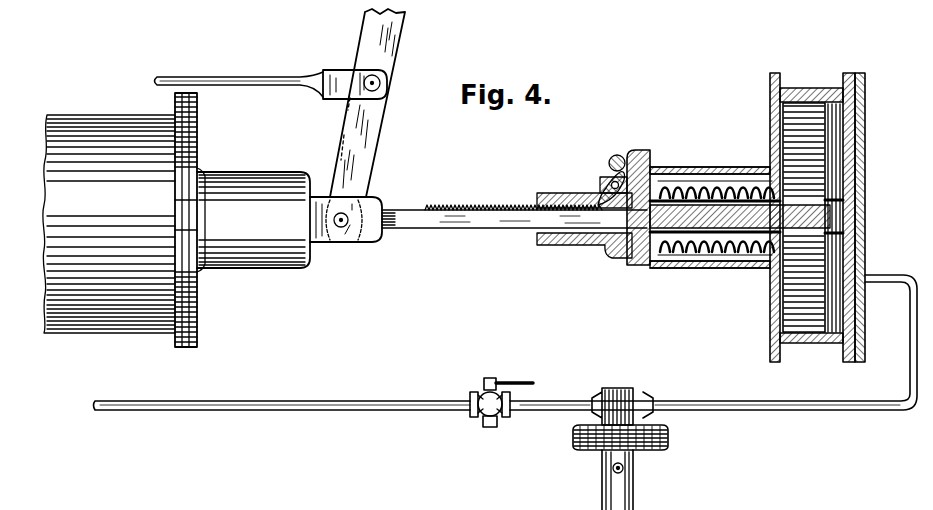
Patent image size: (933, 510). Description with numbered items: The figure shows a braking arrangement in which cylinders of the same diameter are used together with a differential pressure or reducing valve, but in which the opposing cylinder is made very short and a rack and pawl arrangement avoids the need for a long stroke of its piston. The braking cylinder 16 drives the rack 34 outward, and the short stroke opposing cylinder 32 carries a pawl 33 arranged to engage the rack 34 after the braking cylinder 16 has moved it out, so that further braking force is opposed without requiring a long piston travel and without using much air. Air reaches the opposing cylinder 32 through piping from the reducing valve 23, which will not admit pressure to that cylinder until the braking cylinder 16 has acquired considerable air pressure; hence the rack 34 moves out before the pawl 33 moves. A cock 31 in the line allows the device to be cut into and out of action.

The braking cylinder 16 is at (176, 220).
The reducing valve 23 is at (652, 453).
The cock 31 is at (478, 417).
The short stroke opposing cylinder 32 is at (790, 281).
The pawl 33 is at (598, 198).
The rack 34 is at (494, 215).